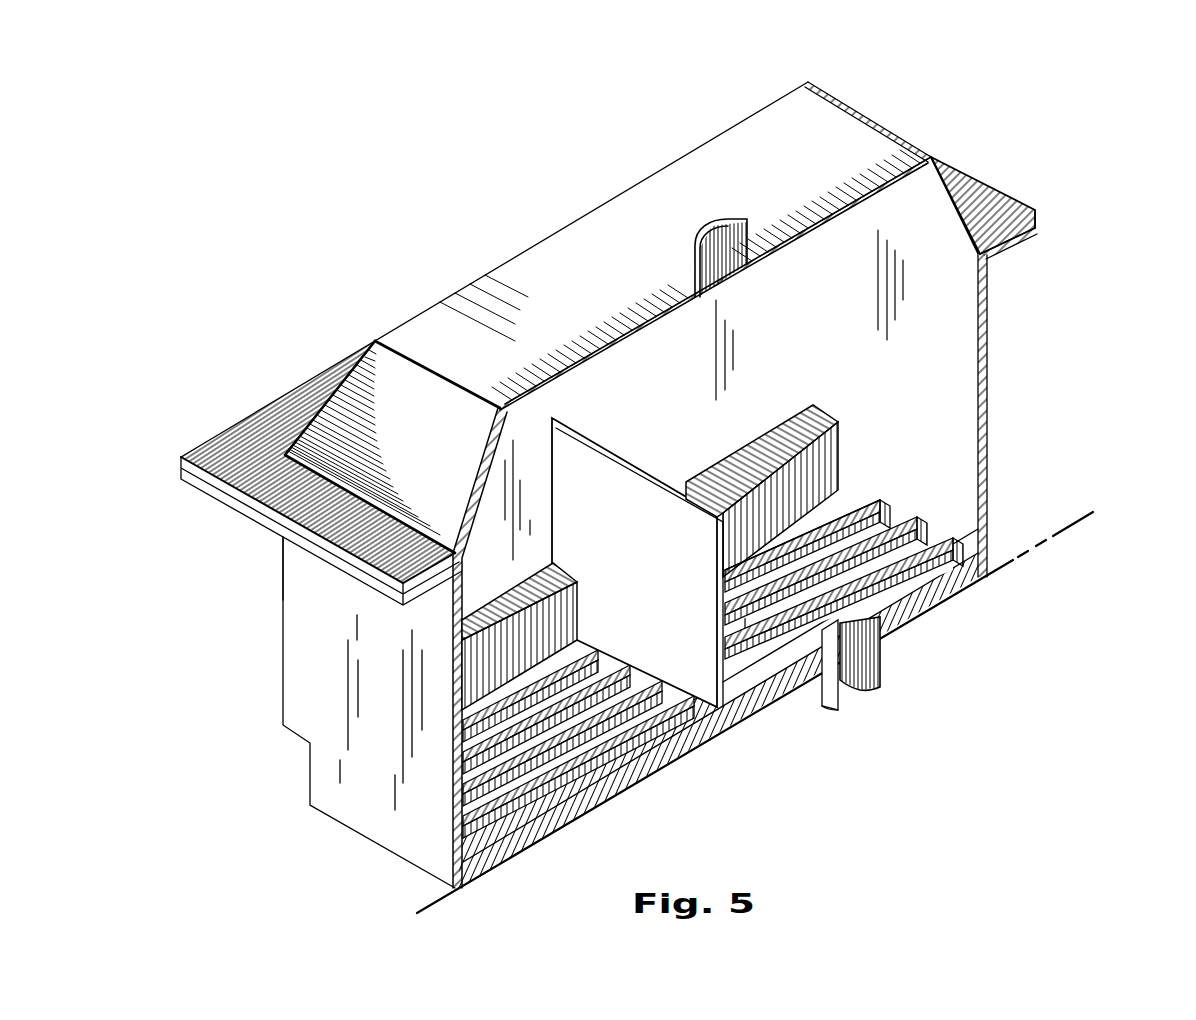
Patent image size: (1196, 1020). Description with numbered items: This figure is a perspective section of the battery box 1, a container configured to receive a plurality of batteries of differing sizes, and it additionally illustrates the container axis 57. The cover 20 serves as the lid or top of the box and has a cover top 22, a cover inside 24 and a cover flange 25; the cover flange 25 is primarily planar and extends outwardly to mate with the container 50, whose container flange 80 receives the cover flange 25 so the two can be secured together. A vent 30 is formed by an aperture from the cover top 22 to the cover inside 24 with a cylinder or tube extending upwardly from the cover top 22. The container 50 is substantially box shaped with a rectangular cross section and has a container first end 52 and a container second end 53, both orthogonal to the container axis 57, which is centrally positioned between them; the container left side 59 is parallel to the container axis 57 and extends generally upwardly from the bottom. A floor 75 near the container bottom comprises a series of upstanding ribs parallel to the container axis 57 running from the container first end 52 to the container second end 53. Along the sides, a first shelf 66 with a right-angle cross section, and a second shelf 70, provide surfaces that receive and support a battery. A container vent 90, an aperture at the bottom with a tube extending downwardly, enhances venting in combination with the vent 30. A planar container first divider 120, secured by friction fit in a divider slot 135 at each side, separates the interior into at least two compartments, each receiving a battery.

The battery box 1 is at (1008, 118).
The cover 20 is at (397, 397).
The cover top 22 is at (632, 223).
The cover inside 24 is at (1002, 192).
The cover flange 25 is at (1020, 200).
The vent 30 is at (723, 220).
The container 50 is at (987, 388).
The container first end 52 is at (987, 333).
The container second end 53 is at (305, 672).
The container axis 57 is at (1055, 537).
The container left side 59 is at (283, 595).
The first shelf 66 is at (782, 445).
The second shelf 70 is at (855, 506).
The floor 75 is at (882, 499).
The container flange 80 is at (1007, 256).
The container vent 90 is at (880, 668).
The container first divider 120 is at (566, 451).
The divider slot 135 is at (578, 606).